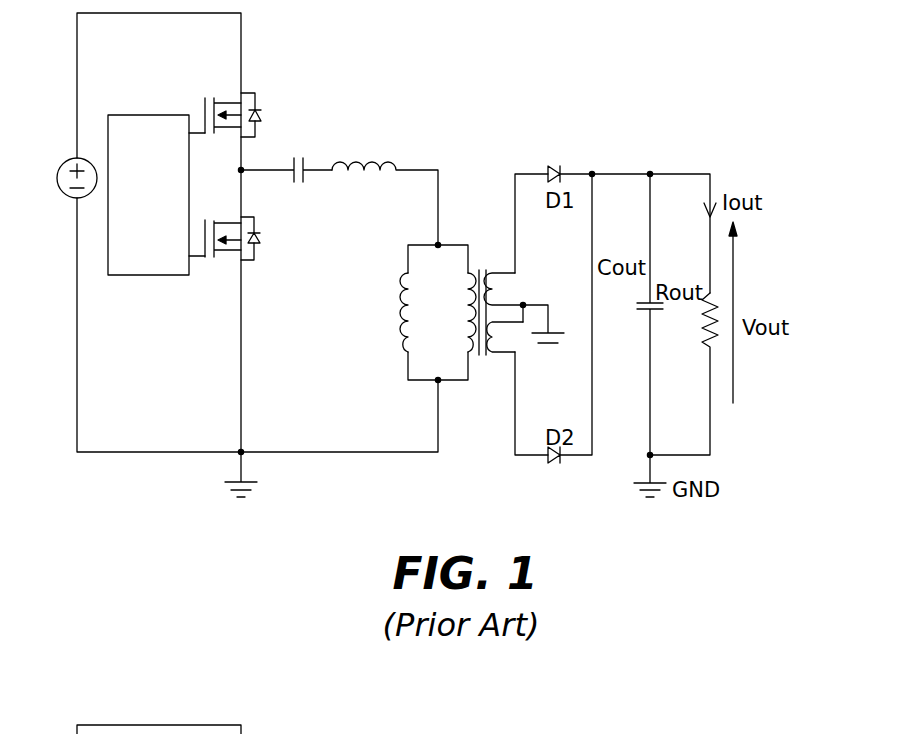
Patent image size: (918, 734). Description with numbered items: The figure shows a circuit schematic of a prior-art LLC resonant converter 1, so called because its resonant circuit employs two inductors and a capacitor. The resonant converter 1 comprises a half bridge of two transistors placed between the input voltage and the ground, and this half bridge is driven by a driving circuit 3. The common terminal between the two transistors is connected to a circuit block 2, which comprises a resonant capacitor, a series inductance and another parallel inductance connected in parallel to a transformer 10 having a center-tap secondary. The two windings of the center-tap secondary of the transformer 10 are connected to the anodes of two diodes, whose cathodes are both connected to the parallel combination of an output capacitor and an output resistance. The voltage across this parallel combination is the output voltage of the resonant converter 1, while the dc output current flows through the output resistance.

The resonant converter 1 is at (264, 63).
The circuit block 2 is at (357, 113).
The driving circuit 3 is at (132, 123).
The transformer 10 is at (486, 256).